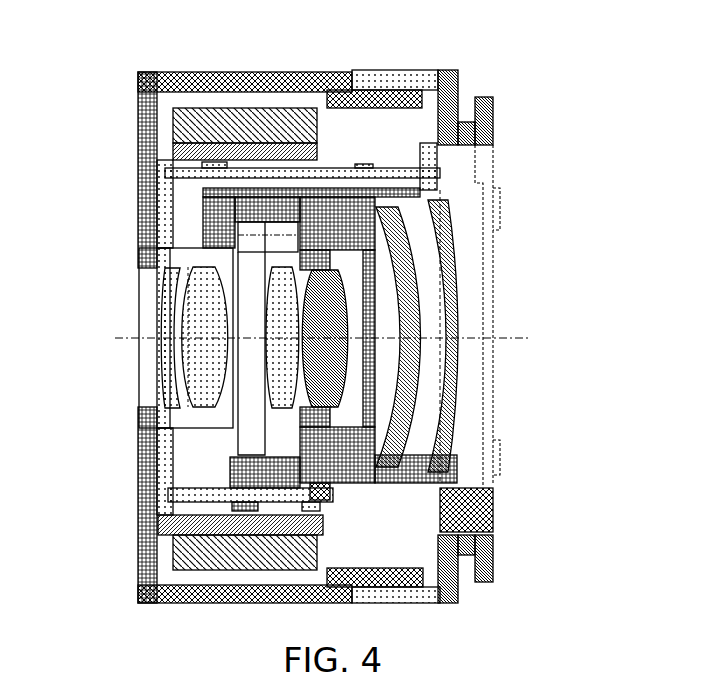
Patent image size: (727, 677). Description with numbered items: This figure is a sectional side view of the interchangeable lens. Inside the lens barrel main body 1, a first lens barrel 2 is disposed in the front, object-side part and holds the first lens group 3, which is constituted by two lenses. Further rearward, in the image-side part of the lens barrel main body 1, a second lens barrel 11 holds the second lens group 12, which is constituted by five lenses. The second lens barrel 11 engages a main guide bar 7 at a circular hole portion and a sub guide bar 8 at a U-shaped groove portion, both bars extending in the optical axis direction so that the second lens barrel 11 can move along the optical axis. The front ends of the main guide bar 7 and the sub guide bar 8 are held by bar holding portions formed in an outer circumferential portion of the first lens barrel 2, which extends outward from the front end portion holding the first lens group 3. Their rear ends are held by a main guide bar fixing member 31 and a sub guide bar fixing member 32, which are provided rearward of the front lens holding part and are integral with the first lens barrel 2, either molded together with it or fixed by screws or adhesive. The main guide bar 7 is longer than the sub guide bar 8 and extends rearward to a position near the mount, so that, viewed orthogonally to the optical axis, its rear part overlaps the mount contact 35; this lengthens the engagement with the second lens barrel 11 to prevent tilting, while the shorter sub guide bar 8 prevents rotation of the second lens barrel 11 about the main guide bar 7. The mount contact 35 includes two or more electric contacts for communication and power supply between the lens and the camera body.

The lens barrel main body 1 is at (353, 76).
The first lens barrel 2 is at (222, 264).
The first lens group 3 is at (213, 317).
The main guide bar 7 is at (370, 178).
The sub guide bar 8 is at (202, 495).
The second lens barrel 11 is at (362, 452).
The second lens group 12 is at (447, 377).
The main guide bar fixing member 31 is at (447, 177).
The sub guide bar fixing member 32 is at (322, 497).
The mount contact 35 is at (458, 511).